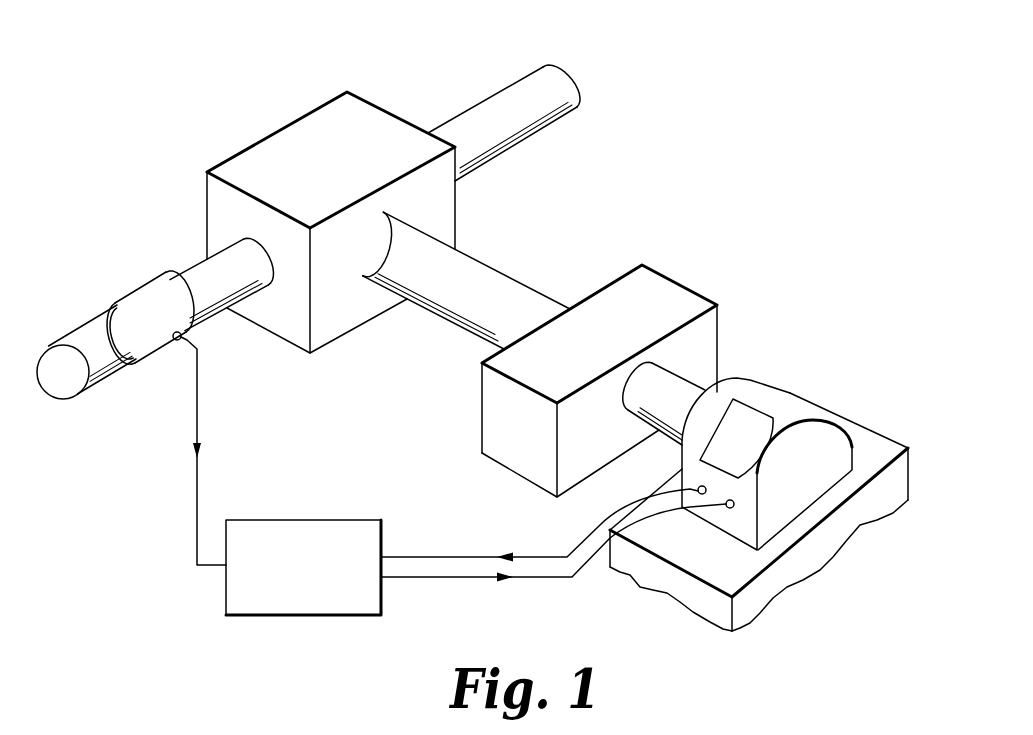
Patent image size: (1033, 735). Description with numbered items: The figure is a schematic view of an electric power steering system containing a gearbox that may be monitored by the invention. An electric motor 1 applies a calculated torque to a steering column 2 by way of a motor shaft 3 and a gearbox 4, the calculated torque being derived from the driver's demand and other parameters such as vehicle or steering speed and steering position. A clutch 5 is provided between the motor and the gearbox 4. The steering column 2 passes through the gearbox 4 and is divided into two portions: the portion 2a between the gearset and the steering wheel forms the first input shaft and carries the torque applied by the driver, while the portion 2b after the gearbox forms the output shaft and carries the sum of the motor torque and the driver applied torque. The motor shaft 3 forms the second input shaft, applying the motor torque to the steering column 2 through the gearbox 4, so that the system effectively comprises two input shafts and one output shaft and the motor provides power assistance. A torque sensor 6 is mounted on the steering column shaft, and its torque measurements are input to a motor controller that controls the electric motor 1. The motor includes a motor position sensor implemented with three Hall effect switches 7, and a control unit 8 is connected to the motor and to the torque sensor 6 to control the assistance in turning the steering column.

The electric motor 1 is at (813, 455).
The steering column 2 is at (318, 247).
The portion of the steering column 2a is at (108, 355).
The portion of the steering column 2b is at (499, 129).
The motor shaft 3 is at (485, 280).
The gearbox 4 is at (341, 162).
The clutch 5 is at (622, 339).
The torque sensor 6 is at (163, 325).
The Hall effect switches 7 is at (743, 423).
The control unit 8 is at (317, 574).